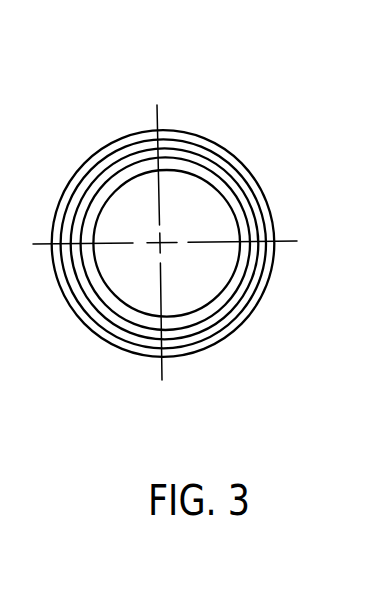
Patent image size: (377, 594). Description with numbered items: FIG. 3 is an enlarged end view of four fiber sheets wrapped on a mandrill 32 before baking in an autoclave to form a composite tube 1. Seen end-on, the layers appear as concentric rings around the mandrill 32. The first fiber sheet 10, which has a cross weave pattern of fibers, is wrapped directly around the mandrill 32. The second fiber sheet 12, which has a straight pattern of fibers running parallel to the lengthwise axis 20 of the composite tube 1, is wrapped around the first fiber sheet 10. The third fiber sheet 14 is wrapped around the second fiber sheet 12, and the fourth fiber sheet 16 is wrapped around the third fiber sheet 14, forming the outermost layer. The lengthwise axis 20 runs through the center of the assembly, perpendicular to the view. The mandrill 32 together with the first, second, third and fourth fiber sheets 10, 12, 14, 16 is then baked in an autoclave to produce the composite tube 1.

The composite tube 1 is at (226, 113).
The first fiber sheet 10 is at (237, 208).
The second fiber sheet 12 is at (232, 183).
The third fiber sheet 14 is at (88, 178).
The fourth fiber sheet 16 is at (120, 138).
The lengthwise axis 20 is at (167, 248).
The mandrill 32 is at (135, 288).